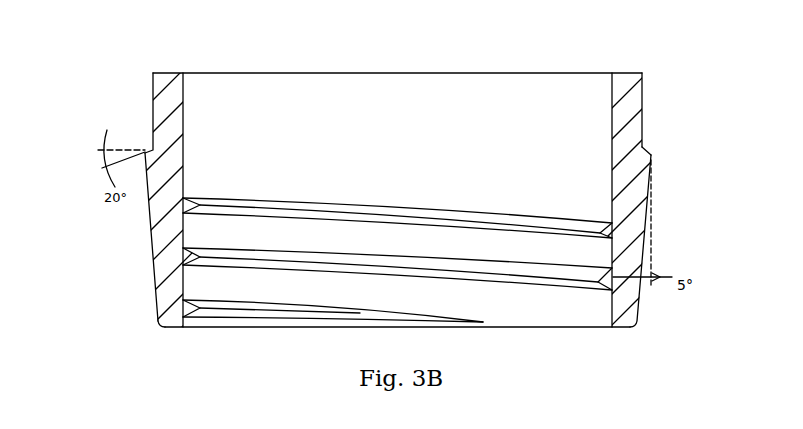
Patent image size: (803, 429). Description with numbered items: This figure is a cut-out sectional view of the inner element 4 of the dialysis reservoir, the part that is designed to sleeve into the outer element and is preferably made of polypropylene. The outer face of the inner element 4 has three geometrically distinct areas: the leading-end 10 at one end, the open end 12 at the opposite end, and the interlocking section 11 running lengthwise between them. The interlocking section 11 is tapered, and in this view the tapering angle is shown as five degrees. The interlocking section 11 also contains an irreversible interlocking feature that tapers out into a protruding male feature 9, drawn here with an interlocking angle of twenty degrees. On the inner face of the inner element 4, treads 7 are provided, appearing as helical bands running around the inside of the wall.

The inner element 4 is at (440, 58).
The treads 7 is at (345, 203).
The protruding male feature 9 is at (645, 143).
The leading-end 10 is at (143, 308).
The interlocking section 11 is at (132, 245).
The open end 12 is at (138, 105).